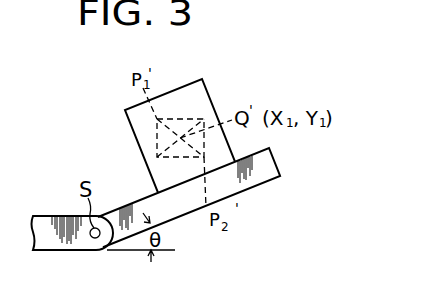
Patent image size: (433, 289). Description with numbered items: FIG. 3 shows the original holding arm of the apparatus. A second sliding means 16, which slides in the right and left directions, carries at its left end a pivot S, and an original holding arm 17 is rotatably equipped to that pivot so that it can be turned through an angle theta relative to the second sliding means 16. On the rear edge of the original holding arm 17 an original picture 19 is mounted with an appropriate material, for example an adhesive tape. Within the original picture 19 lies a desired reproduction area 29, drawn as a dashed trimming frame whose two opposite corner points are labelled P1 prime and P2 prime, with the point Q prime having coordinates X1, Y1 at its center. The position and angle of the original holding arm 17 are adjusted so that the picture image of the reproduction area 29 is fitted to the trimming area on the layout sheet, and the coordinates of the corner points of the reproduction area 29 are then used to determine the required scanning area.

The second sliding means 16 is at (67, 250).
The original holding arm 17 is at (261, 177).
The original picture 19 is at (195, 79).
The reproduction area 29 is at (157, 140).